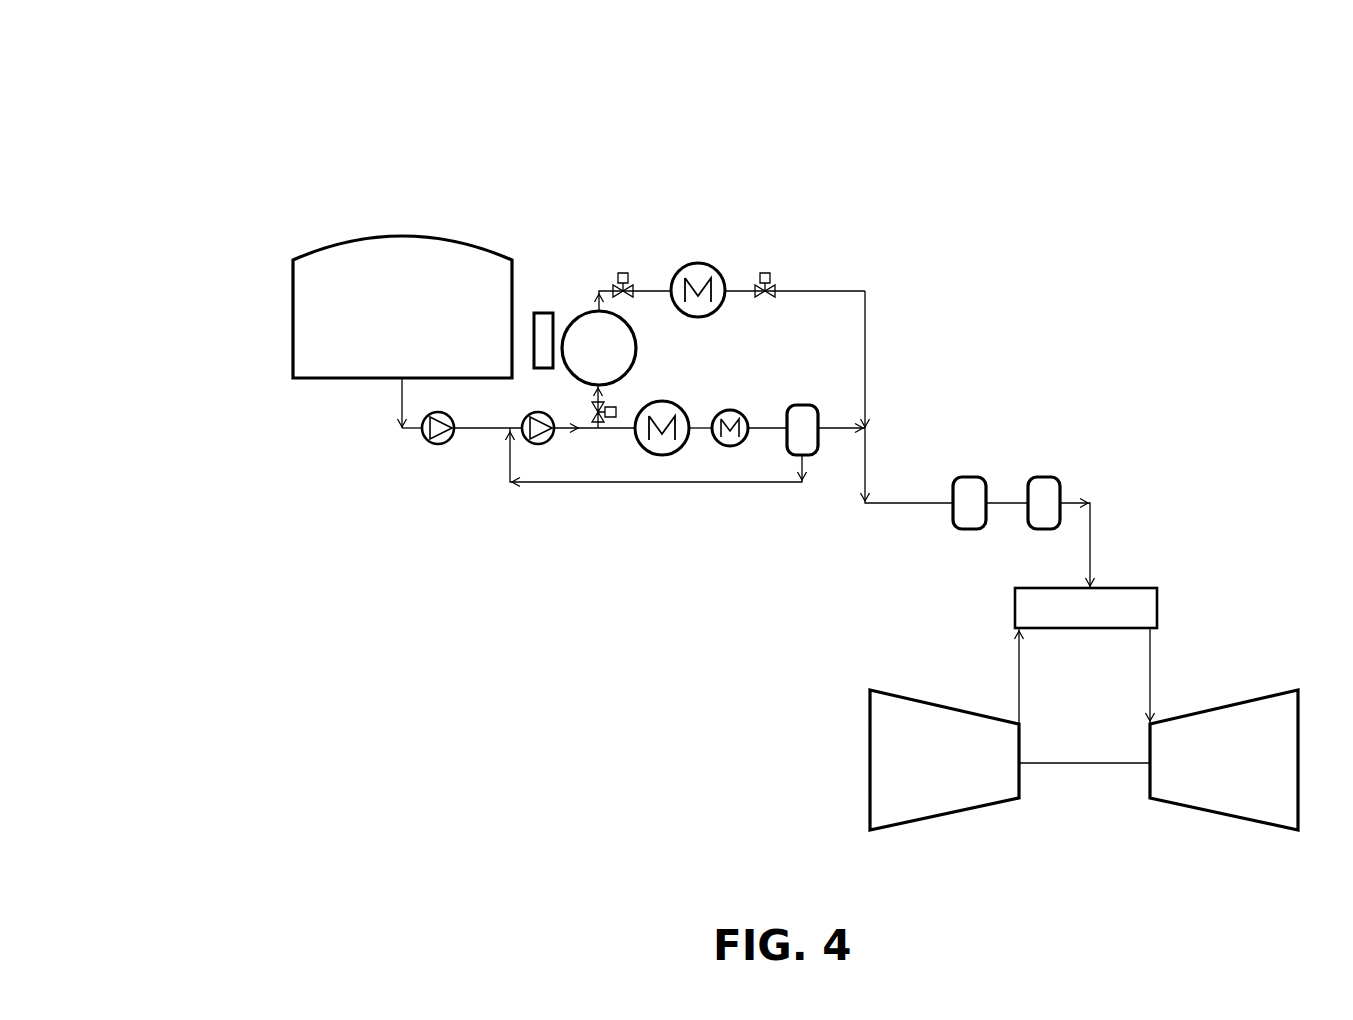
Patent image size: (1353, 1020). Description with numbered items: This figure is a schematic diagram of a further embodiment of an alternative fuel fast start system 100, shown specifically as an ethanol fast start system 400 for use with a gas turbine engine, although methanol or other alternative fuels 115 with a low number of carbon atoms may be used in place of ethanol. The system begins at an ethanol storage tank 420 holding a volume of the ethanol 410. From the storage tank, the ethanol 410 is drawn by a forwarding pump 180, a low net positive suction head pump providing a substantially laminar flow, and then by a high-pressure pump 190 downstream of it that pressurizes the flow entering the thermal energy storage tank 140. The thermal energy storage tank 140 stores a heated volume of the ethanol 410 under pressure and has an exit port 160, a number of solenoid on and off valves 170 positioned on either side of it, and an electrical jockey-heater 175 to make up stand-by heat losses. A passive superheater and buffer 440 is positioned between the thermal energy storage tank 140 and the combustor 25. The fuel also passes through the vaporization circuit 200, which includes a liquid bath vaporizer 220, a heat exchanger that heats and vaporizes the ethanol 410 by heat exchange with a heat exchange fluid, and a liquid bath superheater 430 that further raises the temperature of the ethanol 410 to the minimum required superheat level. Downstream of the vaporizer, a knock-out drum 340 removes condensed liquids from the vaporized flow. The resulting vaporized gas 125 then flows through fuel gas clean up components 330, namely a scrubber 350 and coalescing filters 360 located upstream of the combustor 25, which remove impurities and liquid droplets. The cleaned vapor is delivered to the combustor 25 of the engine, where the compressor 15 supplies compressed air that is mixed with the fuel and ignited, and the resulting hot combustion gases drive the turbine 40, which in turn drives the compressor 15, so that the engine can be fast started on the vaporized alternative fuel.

The alternative fuel fast start system 100 is at (352, 84).
The ethanol fast start system 400 is at (774, 535).
The ethanol storage tank 420 is at (320, 248).
The ethanol 410 is at (397, 385).
The alternative fuels 115 is at (397, 413).
The forwarding pump 180 is at (422, 440).
The vaporization circuit 200 is at (478, 436).
The high-pressure pump 190 is at (548, 440).
The exit port 160 is at (596, 300).
The thermal energy storage tank 140 is at (637, 327).
The electrical jockey-heater 175 is at (533, 325).
The valves 170 is at (625, 274).
The passive superheater and buffer 440 is at (708, 265).
The liquid bath vaporizer 220 is at (680, 410).
The liquid bath superheater 430 is at (715, 445).
The knock-out drum 340 is at (798, 405).
The vaporized propane gas 125 is at (866, 460).
The scrubber 350 is at (968, 477).
The filters 360 is at (1028, 477).
The fuel gas clean up components 330 is at (1066, 470).
The combustor 25 is at (1118, 585).
The compressor 15 is at (957, 815).
The turbine 40 is at (1222, 815).